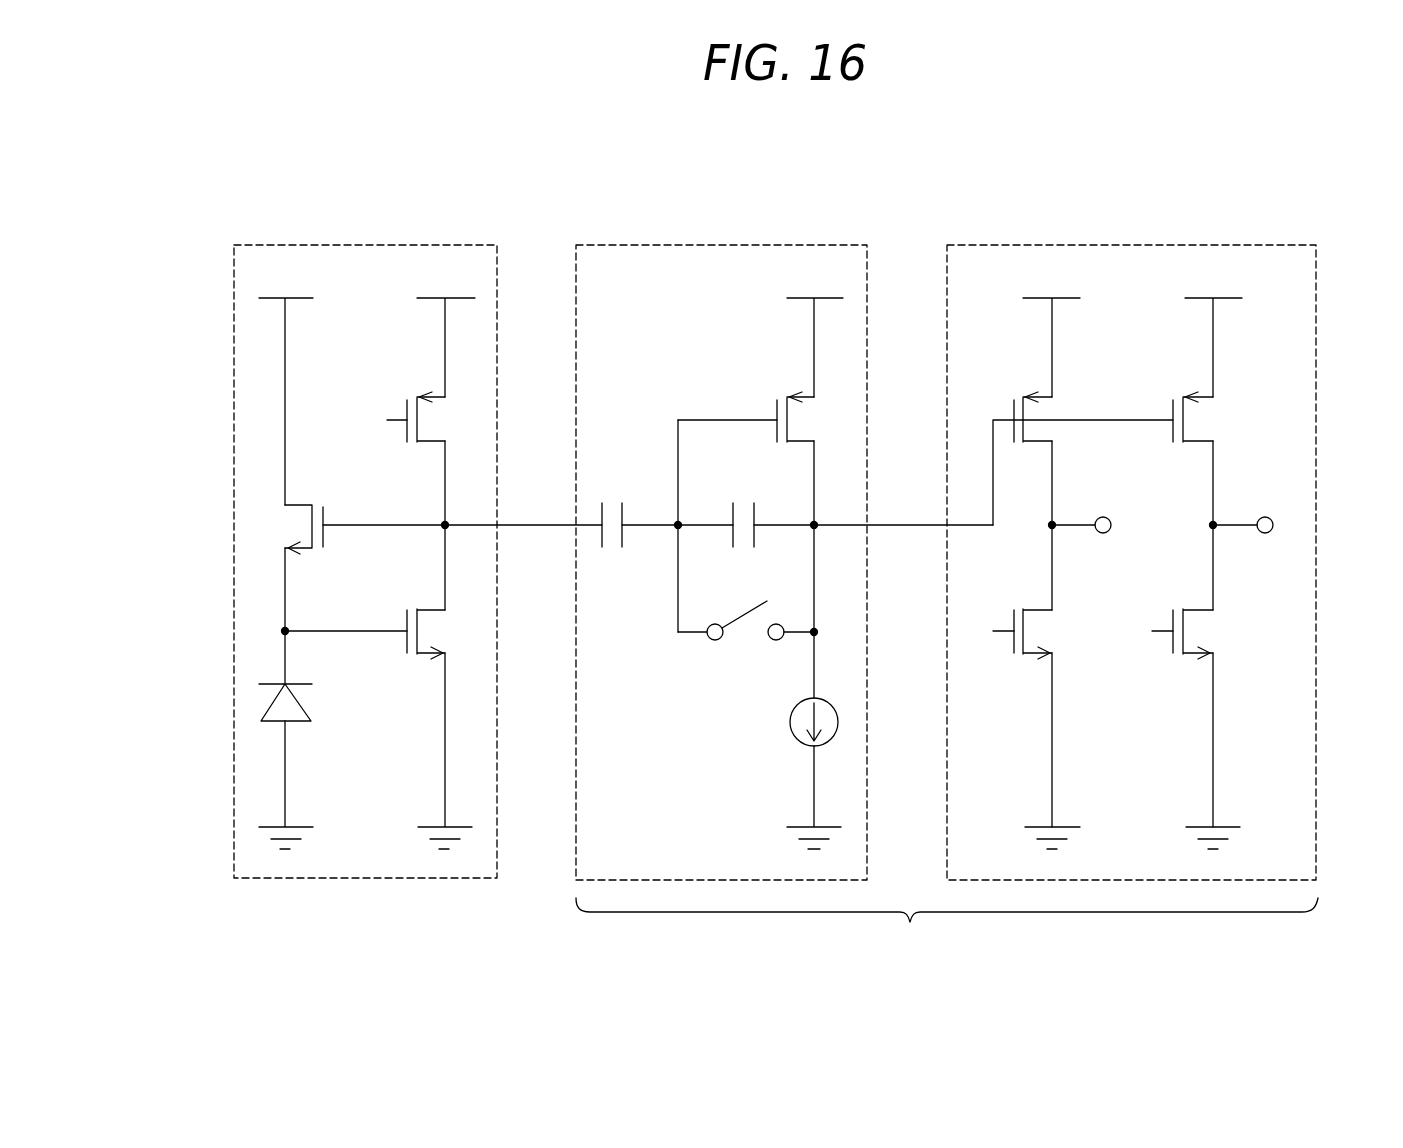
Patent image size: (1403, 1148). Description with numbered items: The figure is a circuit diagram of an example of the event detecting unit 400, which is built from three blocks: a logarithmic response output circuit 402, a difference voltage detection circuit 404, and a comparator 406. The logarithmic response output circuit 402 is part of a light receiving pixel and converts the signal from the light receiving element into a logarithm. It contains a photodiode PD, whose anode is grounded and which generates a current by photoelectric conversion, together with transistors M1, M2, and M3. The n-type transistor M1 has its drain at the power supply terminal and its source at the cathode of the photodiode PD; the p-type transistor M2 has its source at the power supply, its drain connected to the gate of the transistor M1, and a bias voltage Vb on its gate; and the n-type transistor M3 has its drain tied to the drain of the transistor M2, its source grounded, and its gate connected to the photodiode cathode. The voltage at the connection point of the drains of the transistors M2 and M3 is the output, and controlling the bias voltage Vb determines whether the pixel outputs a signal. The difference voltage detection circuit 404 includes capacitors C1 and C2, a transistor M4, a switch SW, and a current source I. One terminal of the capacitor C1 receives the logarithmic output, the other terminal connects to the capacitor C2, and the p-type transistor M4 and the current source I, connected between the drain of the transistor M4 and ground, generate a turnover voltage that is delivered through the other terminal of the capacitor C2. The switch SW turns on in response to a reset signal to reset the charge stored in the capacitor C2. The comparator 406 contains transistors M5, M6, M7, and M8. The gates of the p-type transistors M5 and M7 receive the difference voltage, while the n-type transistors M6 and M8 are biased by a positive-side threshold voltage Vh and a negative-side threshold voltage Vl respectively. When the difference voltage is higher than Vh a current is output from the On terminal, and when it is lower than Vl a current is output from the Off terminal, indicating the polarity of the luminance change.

The event detecting unit 400 is at (1273, 160).
The logarithmic response output circuit 402 is at (477, 244).
The difference voltage detection circuit 404 is at (840, 244).
The comparator 406 is at (1295, 245).
The transistor M1 is at (316, 503).
The transistor M2 is at (424, 424).
The transistor M3 is at (432, 634).
The transistor M4 is at (801, 424).
The transistor M5 is at (1052, 412).
The transistor M6 is at (1044, 631).
The transistor M7 is at (1207, 421).
The transistor M8 is at (1207, 624).
The capacitor C1 is at (611, 500).
The capacitor C2 is at (741, 500).
The switch SW is at (750, 637).
The current source I is at (790, 727).
The photodiode PD is at (312, 688).
The bias voltage Vb is at (377, 414).
The bias voltage Vh is at (987, 625).
The bias voltage Vl is at (1145, 625).
The On terminal On is at (1097, 516).
The Off terminal Off is at (1258, 516).